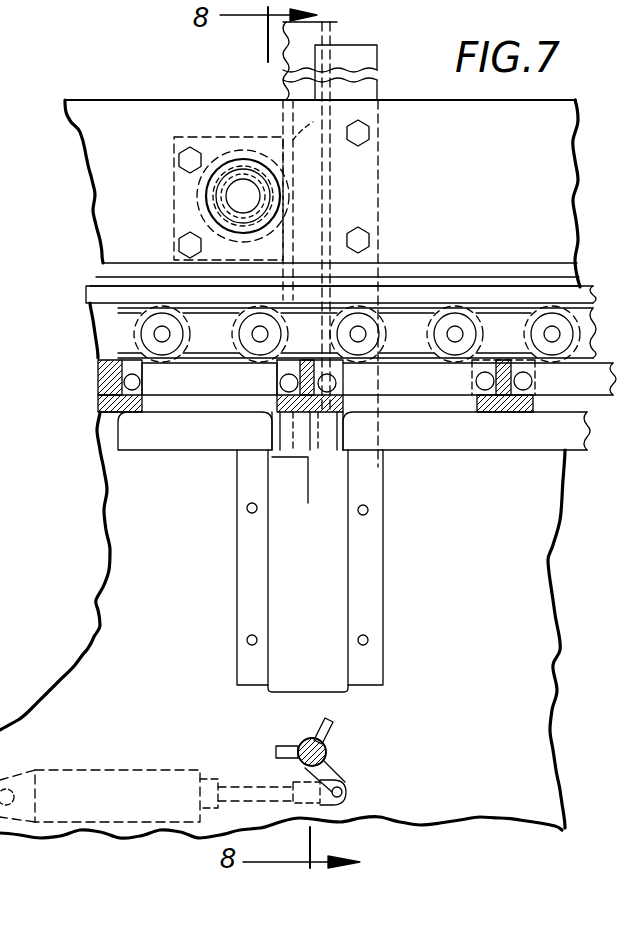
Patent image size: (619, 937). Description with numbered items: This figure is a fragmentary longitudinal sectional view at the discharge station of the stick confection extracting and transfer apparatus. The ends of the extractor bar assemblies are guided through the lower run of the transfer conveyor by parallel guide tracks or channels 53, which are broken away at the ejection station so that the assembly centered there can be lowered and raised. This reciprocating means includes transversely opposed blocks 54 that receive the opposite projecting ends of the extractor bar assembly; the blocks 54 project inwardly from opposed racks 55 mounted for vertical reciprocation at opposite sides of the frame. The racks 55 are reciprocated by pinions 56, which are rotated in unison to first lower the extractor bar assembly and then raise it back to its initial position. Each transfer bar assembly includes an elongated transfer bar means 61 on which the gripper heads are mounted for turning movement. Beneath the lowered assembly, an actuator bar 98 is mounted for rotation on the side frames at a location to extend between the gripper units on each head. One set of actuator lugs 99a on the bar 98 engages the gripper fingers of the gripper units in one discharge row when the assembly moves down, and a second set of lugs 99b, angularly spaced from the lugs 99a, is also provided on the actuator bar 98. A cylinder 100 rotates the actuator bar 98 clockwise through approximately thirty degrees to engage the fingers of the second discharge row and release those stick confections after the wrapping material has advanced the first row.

The guide tracks 53 is at (208, 388).
The blocks 54 is at (325, 433).
The racks 55 is at (310, 42).
The pinions 56 is at (205, 178).
The transfer bar means 61 is at (343, 398).
The actuator bar 98 is at (326, 756).
The actuator lugs 99a is at (330, 722).
The lugs 99b is at (276, 750).
The cylinder 100 is at (110, 770).